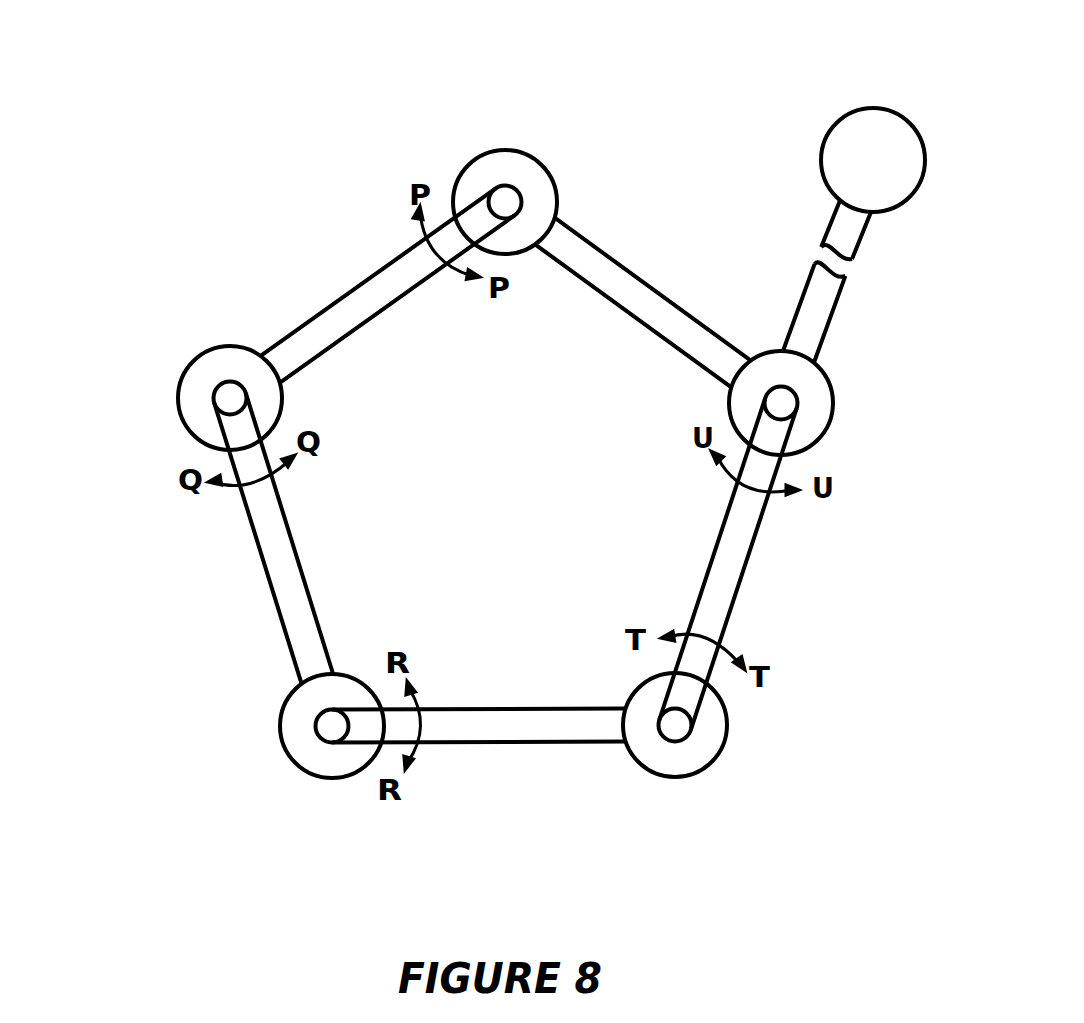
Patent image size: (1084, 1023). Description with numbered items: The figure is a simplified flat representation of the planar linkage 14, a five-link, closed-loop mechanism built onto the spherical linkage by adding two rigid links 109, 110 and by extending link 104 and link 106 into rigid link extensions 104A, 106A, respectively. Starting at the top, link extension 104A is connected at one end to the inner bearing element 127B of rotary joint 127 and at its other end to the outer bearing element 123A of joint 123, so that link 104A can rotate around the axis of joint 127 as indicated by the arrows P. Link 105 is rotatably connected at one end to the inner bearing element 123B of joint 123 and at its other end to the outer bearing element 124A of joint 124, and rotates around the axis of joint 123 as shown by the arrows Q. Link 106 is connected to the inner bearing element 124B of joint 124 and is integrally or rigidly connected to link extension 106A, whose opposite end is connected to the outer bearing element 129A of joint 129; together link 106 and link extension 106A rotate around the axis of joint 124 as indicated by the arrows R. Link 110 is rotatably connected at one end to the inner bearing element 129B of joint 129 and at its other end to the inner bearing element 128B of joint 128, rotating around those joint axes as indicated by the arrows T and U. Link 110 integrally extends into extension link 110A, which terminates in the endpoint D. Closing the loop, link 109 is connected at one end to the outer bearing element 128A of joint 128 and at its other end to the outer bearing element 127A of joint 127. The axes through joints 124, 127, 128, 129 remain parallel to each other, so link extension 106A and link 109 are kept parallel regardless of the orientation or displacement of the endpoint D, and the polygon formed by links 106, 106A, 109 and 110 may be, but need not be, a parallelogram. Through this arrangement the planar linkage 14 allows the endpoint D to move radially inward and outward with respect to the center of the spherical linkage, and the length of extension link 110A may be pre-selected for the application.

The planar linkage 14 is at (527, 46).
The rotary joint 127 is at (505, 168).
The outer bearing element of joint 127 127A is at (556, 189).
The inner bearing element of joint 127 127B is at (525, 140).
The rotary joint 123 is at (178, 392).
The outer bearing element of joint 123 123A is at (185, 373).
The inner bearing element of joint 123 123B is at (217, 440).
The rotary joint 128 is at (845, 435).
The outer bearing element of joint 128 128A is at (803, 448).
The inner bearing element of joint 128 128B is at (797, 397).
The rotary joint 124 is at (285, 751).
The outer bearing element of joint 124 124A is at (281, 727).
The inner bearing element of joint 124 124B is at (337, 740).
The rotary joint 129 is at (743, 755).
The outer bearing element of joint 129 129A is at (727, 727).
The inner bearing element of joint 129 129B is at (690, 743).
The link 104 is at (347, 286).
The link extension 104A is at (293, 332).
The rigid link 109 is at (660, 297).
The rigid link 110 is at (727, 573).
The extension link 110A is at (807, 325).
The link 105 is at (266, 555).
The link 106 is at (479, 764).
The link extension 106A is at (507, 728).
The endpoint D is at (873, 160).